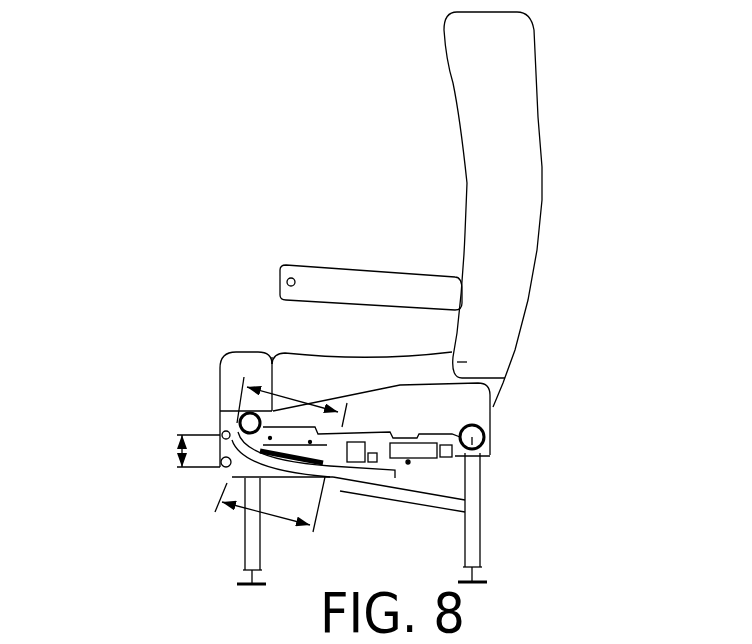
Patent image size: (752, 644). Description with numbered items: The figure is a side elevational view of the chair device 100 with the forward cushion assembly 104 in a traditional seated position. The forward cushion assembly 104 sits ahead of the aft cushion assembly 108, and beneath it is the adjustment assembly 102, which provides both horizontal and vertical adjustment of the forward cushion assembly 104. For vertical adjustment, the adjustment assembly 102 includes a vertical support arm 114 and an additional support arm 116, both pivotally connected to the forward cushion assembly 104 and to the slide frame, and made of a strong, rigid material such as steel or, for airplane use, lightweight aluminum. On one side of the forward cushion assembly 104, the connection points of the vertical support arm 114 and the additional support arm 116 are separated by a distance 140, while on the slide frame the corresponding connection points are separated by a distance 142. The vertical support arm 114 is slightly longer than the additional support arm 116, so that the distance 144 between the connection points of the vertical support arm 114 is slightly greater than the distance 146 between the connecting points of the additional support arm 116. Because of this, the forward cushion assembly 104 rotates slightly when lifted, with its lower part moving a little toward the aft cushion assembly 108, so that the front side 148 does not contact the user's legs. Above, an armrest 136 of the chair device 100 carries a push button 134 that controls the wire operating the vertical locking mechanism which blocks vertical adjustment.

The chair device 100 is at (180, 112).
The adjustment assembly 102 is at (440, 468).
The forward cushion assembly 104 is at (220, 380).
The aft cushion assembly 108 is at (373, 368).
The vertical support arm 114 is at (223, 457).
The additional support arm 116 is at (262, 476).
The push button 134 is at (287, 281).
The armrest 136 is at (383, 293).
The distance 140 is at (183, 452).
The distance 142 is at (415, 482).
The distance 144 is at (273, 402).
The distance 146 is at (267, 512).
The front side 148 is at (217, 423).